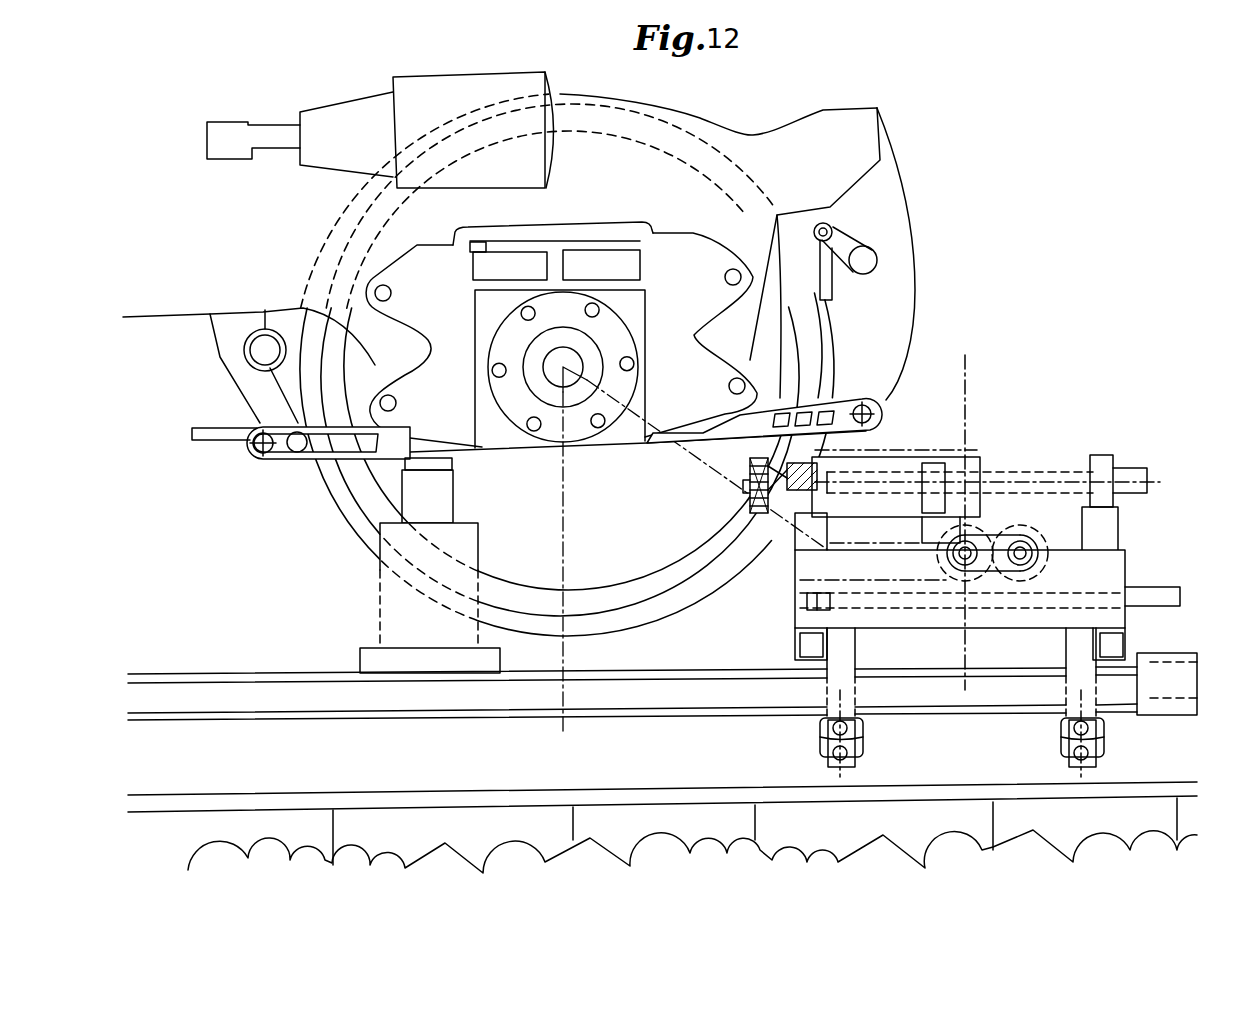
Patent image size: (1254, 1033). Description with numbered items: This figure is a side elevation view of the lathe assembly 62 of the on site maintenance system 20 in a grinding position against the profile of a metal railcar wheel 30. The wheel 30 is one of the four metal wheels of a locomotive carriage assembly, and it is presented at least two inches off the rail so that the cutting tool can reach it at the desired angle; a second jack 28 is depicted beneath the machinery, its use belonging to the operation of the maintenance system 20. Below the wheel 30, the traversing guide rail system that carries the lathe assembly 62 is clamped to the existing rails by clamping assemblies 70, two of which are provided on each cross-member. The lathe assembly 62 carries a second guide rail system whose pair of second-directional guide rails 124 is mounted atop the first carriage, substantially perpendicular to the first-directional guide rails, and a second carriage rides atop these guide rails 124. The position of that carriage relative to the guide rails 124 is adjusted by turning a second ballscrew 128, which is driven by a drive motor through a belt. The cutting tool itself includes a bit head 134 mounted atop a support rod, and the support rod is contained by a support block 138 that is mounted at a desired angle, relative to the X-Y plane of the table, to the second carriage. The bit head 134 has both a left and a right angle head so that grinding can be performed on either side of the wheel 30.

The on site maintenance system 20 is at (1022, 534).
The lathe assembly 62 is at (1022, 558).
The second jack 28 is at (393, 597).
The metal wheel 30 is at (652, 531).
The clamping assembly 70 is at (863, 757).
The second-directional guide rail 124 is at (1180, 594).
The second ballscrew 128 is at (1137, 471).
The bit head 134 is at (747, 487).
The support block 138 is at (887, 457).